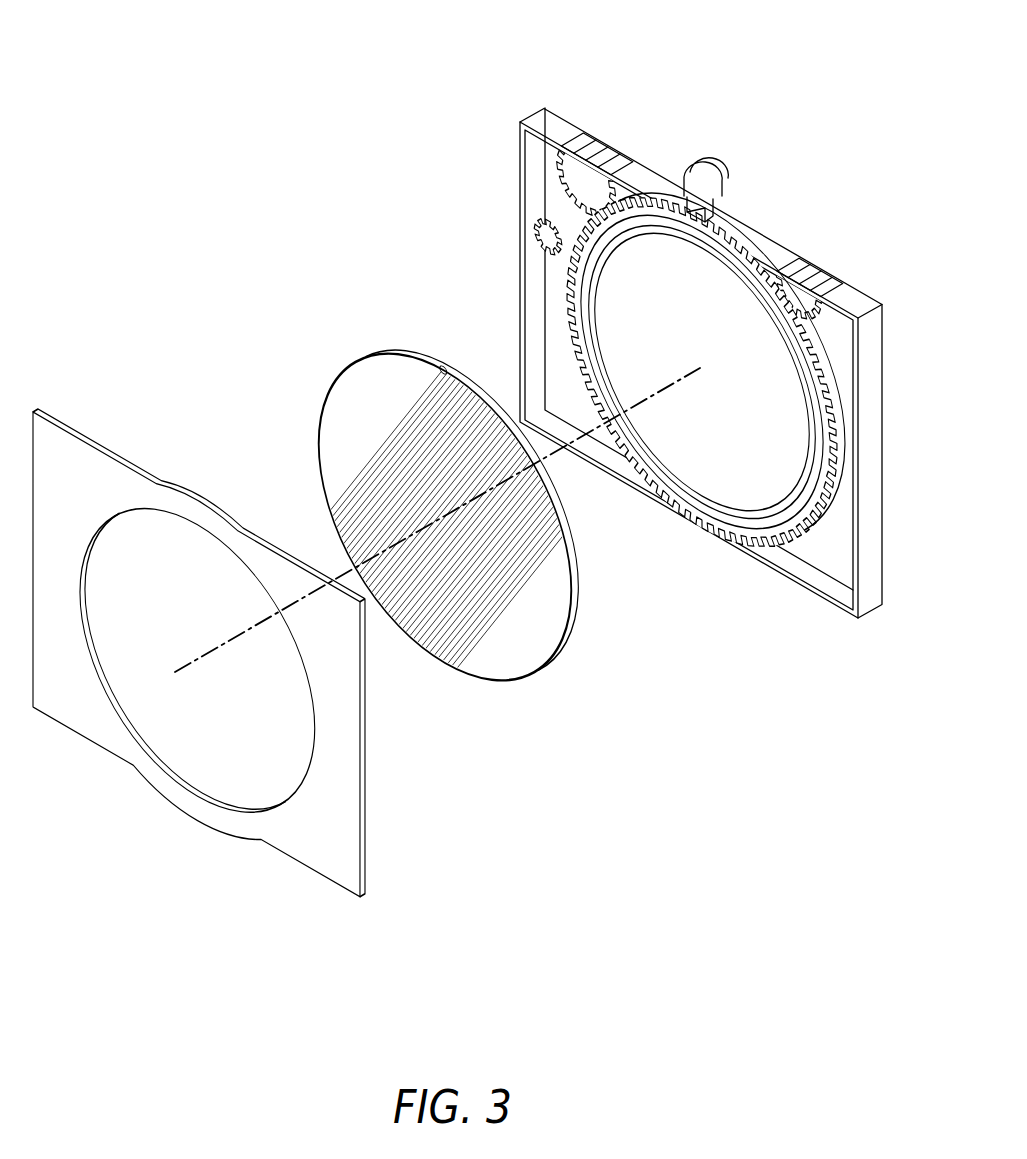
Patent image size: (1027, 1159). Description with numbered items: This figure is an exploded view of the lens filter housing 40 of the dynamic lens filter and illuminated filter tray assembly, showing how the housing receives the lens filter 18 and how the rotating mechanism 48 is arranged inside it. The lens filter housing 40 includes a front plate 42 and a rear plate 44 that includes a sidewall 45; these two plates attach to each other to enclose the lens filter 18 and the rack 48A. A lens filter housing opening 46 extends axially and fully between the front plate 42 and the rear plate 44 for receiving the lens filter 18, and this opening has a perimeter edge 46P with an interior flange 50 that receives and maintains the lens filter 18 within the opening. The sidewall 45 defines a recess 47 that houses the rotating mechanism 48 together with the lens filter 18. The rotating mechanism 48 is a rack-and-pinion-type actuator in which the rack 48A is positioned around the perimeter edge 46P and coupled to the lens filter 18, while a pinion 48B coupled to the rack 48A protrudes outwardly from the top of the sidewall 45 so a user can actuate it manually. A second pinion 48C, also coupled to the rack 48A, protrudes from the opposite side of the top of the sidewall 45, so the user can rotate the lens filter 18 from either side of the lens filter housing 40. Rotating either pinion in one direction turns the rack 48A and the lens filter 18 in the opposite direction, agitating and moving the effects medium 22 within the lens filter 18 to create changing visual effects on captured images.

The lens filter housing 40 is at (238, 104).
The front plate 42 is at (78, 433).
The lens filter 18 is at (342, 367).
The effects medium 22 is at (510, 643).
The rear plate 44 is at (860, 287).
The sidewall 45 is at (870, 397).
The lens filter housing opening 46 is at (710, 265).
The perimeter edge 46P is at (623, 208).
The interior flange 50 is at (610, 228).
The recess 47 is at (828, 546).
The rotating mechanism 48 is at (650, 186).
The rack 48A is at (565, 252).
The pinion 48B is at (600, 128).
The second pinion 48C is at (811, 254).